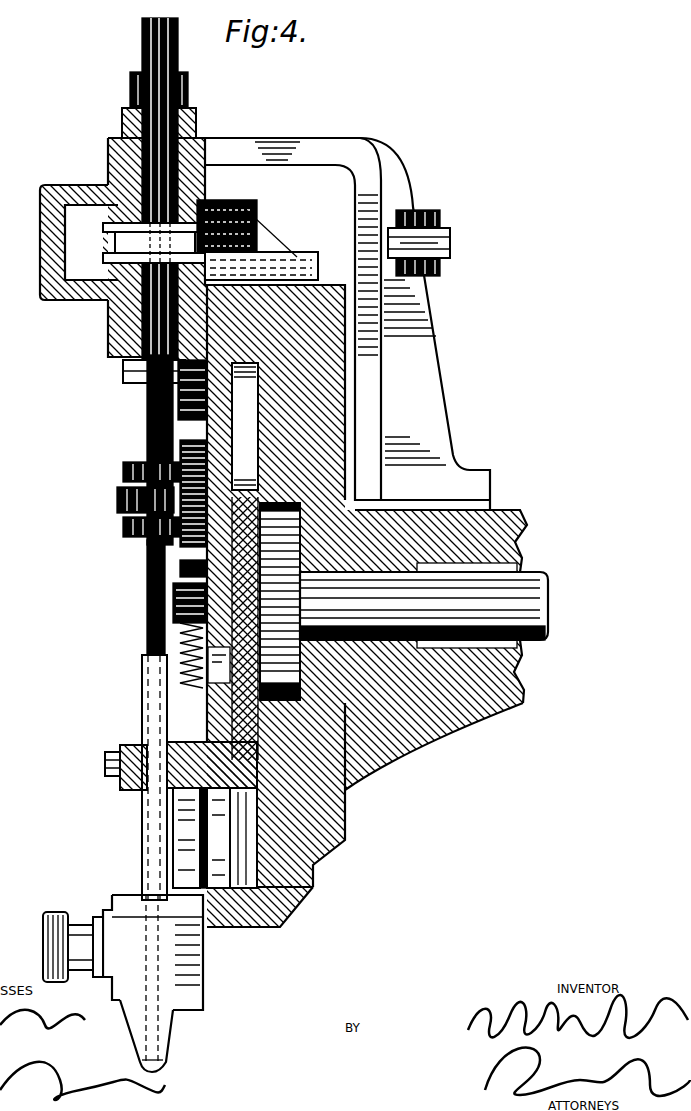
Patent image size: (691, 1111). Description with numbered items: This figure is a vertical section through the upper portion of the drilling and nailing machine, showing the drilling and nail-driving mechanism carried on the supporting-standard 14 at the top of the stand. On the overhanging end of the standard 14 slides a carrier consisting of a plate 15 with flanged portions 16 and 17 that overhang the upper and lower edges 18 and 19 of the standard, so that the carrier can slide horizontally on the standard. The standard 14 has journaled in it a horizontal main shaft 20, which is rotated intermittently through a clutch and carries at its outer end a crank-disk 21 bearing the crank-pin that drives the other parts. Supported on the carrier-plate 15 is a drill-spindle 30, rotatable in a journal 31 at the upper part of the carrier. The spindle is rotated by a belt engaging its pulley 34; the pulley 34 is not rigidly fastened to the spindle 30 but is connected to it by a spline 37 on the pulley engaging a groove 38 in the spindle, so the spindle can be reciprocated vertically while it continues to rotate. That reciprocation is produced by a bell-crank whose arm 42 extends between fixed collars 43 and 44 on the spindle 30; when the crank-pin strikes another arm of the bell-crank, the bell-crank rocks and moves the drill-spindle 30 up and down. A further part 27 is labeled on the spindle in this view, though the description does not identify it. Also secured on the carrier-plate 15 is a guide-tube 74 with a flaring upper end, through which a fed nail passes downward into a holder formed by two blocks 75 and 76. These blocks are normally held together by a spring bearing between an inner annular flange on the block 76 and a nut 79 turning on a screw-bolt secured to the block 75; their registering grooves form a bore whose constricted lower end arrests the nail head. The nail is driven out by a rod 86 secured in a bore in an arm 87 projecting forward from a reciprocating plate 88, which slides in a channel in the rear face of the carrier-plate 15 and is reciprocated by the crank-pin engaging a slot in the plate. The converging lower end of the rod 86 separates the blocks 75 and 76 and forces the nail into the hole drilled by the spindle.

The supporting-standard 14 is at (517, 521).
The carrier-plate 15 is at (113, 348).
The flanged portion 16 is at (313, 895).
The flanged portion 17 is at (320, 287).
The upper edge 18 is at (297, 340).
The lower edge 19 is at (313, 830).
The main shaft 20 is at (533, 590).
The crank-disk 21 is at (266, 561).
The spindle rod 27 is at (147, 588).
The drill-spindle 30 is at (142, 425).
The journal 31 is at (115, 300).
The pulley 34 is at (92, 183).
The spline 37 is at (178, 195).
The groove 38 is at (116, 255).
The arm of the bell-crank 42 is at (117, 500).
The fixed collar 43 is at (123, 466).
The fixed collar 44 is at (123, 530).
The guide-tube 74 is at (142, 648).
The block 75 is at (203, 988).
The block 76 is at (127, 1003).
The nut 79 is at (43, 932).
The rod 86 is at (150, 845).
The arm 87 is at (120, 772).
The reciprocating plate 88 is at (243, 733).